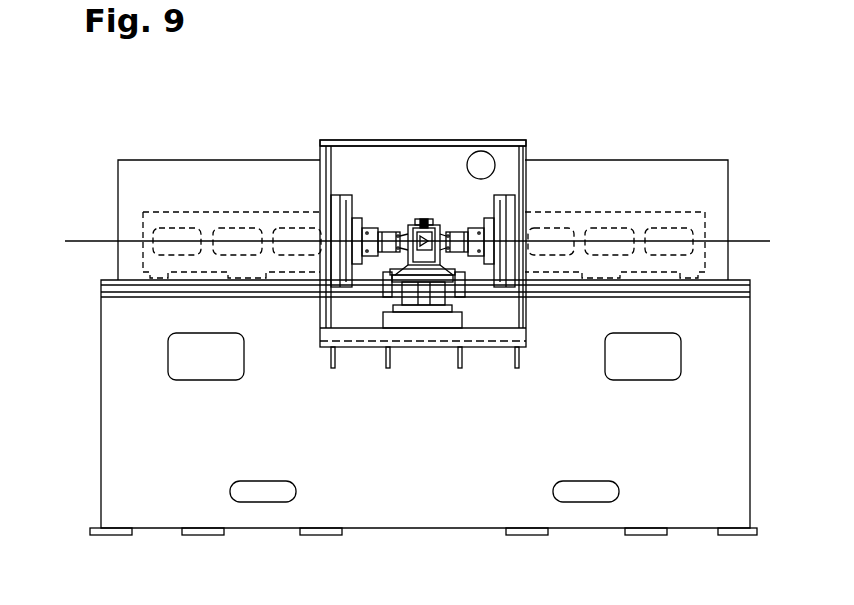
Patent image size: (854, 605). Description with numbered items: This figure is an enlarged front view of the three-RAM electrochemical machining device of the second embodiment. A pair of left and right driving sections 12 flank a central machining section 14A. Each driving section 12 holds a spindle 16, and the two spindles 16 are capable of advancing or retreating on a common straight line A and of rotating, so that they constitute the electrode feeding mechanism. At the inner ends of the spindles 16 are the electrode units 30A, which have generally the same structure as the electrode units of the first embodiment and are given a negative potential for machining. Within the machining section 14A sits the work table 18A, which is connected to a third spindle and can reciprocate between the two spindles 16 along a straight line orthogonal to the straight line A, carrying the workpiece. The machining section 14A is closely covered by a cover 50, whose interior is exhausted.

The driving section 12 is at (237, 160).
The spindle 16 is at (180, 212).
The machining section 14A is at (435, 130).
The cover 50 is at (394, 140).
The electrode unit 30A is at (393, 235).
The work table 18A is at (470, 277).
The straight line A is at (760, 240).